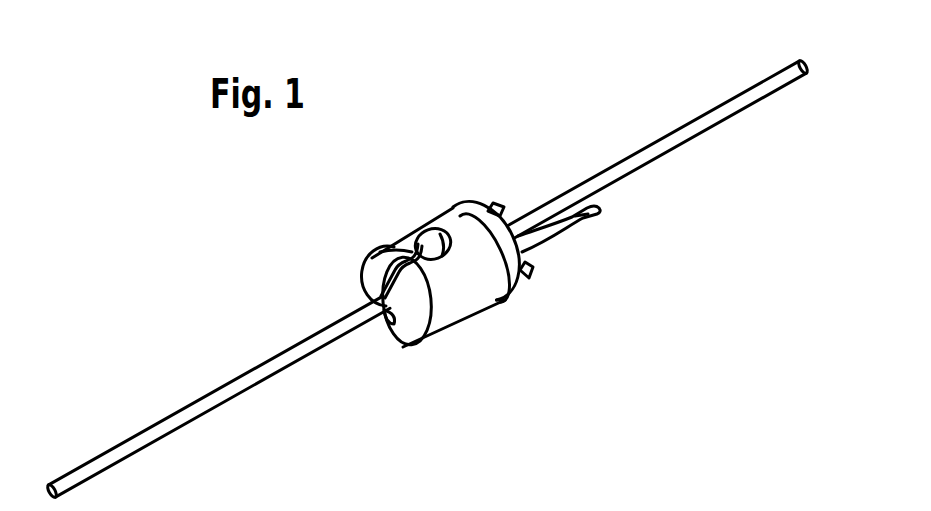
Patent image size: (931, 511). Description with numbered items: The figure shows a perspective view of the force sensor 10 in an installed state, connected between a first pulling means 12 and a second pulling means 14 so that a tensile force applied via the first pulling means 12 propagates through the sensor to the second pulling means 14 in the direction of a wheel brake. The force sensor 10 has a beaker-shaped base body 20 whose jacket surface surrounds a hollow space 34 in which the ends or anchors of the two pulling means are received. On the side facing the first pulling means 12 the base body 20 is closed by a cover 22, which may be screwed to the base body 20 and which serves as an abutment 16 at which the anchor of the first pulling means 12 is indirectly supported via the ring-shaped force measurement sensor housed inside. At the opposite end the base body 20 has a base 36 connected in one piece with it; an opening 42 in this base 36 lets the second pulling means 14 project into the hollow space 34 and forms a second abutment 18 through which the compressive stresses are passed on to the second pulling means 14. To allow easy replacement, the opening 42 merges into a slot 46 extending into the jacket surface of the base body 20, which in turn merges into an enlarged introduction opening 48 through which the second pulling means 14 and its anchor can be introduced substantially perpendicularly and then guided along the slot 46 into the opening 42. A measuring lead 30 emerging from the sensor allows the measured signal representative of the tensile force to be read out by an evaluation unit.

The force sensor 10 is at (465, 276).
The first pulling means 12 is at (719, 110).
The second pulling means 14 is at (90, 465).
The abutment 16 is at (512, 218).
The second abutment 18 is at (392, 326).
The base body 20 is at (460, 300).
The cover 22 is at (490, 204).
The measuring lead 30 is at (588, 221).
The hollow space 34 is at (420, 218).
The base 36 is at (370, 284).
The opening 42 is at (389, 317).
The slot 46 is at (382, 262).
The introduction opening 48 is at (504, 300).